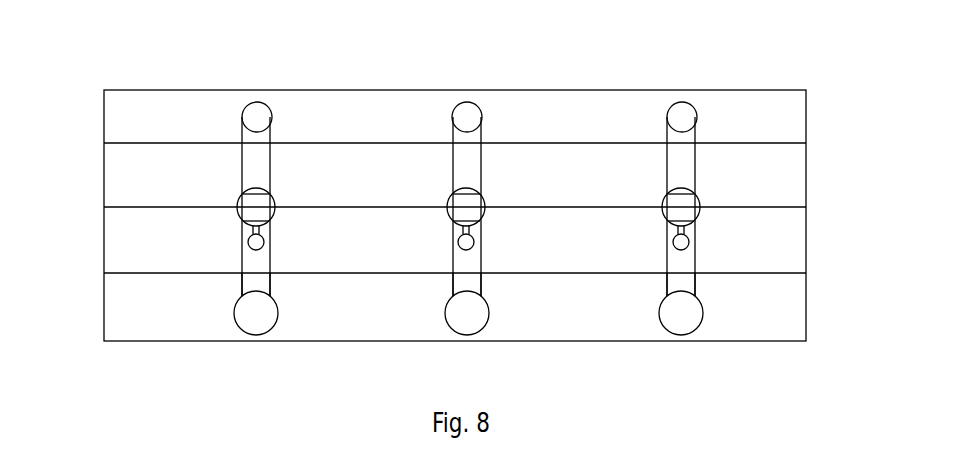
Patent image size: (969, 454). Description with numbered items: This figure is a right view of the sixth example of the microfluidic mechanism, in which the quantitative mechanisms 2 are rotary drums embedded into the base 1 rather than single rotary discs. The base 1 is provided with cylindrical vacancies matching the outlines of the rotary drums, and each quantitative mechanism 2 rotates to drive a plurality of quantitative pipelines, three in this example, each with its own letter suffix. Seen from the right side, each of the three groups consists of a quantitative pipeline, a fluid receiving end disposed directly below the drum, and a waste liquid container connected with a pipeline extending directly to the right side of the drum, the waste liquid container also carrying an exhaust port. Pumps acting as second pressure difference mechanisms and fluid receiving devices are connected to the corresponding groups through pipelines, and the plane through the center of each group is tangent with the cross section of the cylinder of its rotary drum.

The base 1 is at (772, 125).
The quantitative mechanism 2 is at (770, 243).